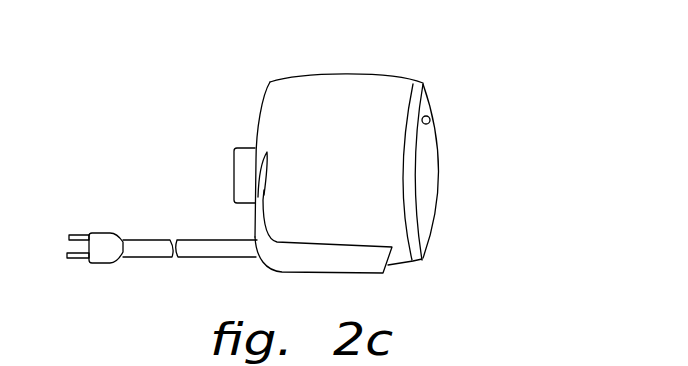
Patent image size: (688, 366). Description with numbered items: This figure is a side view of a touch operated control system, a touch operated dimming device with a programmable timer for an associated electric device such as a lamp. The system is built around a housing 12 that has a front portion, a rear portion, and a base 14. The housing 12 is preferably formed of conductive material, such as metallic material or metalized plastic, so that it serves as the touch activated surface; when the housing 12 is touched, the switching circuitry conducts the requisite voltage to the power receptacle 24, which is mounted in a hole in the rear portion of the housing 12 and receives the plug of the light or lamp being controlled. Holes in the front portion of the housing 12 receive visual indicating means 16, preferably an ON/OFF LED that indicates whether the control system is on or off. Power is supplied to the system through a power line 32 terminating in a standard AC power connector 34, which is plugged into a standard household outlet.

The housing 12 is at (326, 78).
The base 14 is at (345, 267).
The visual indicating means 16 is at (431, 119).
The power receptacle 24 is at (242, 170).
The power line 32 is at (150, 247).
The standard AC power connector 34 is at (100, 242).